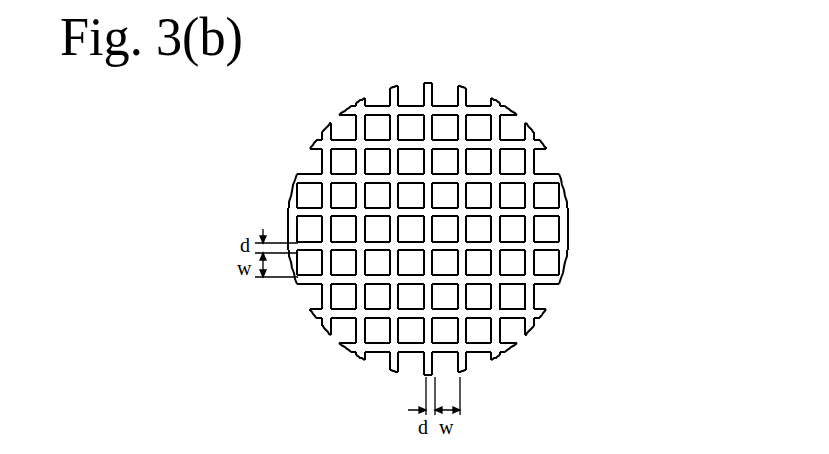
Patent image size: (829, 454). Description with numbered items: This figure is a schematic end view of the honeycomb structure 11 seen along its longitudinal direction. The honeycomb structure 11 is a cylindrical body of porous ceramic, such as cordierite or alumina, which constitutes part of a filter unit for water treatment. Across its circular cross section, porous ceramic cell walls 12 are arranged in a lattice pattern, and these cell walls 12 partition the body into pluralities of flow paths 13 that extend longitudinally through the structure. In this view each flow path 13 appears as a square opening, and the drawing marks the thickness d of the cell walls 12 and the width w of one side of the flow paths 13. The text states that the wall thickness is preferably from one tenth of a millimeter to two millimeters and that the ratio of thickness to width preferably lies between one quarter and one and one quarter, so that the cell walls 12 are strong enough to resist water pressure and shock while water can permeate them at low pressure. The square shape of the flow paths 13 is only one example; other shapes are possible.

The honeycomb structure 11 is at (559, 138).
The cell wall 12 is at (530, 231).
The flow path 13 is at (518, 298).